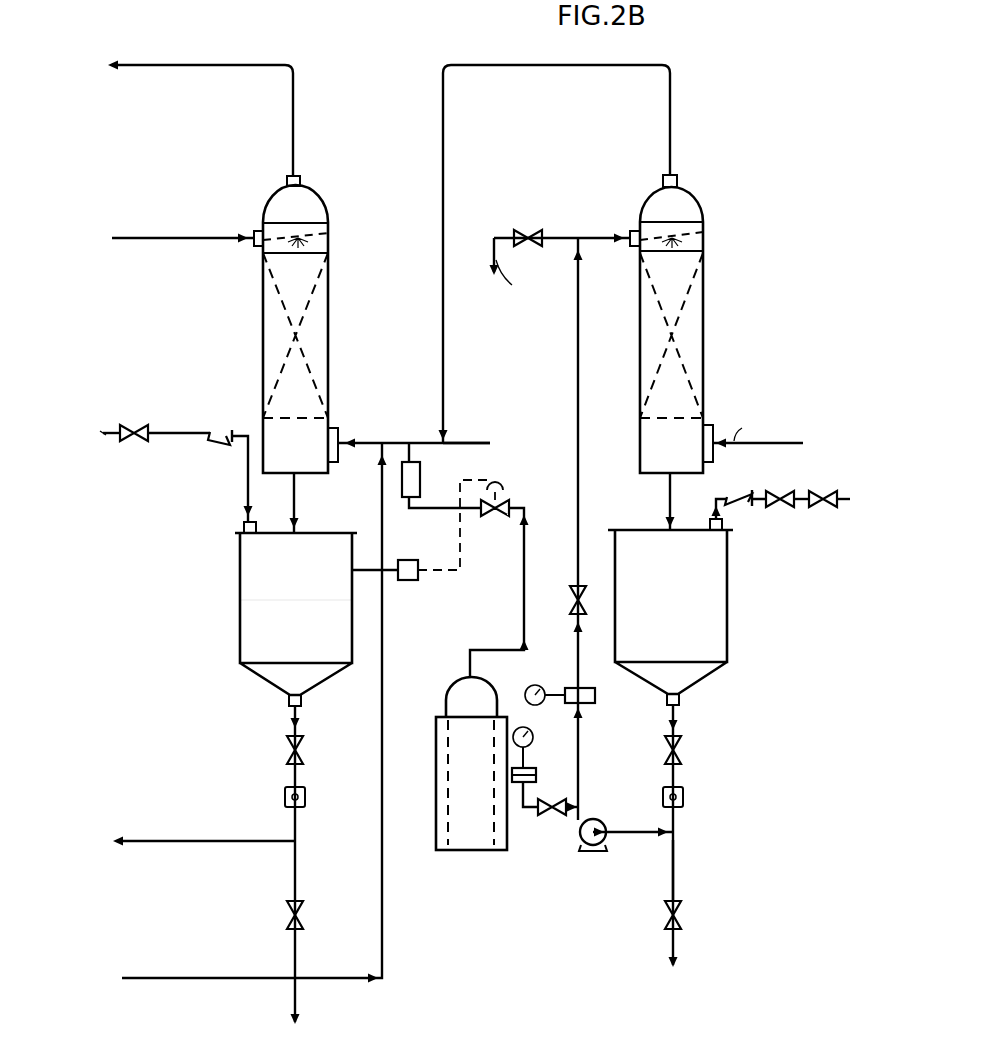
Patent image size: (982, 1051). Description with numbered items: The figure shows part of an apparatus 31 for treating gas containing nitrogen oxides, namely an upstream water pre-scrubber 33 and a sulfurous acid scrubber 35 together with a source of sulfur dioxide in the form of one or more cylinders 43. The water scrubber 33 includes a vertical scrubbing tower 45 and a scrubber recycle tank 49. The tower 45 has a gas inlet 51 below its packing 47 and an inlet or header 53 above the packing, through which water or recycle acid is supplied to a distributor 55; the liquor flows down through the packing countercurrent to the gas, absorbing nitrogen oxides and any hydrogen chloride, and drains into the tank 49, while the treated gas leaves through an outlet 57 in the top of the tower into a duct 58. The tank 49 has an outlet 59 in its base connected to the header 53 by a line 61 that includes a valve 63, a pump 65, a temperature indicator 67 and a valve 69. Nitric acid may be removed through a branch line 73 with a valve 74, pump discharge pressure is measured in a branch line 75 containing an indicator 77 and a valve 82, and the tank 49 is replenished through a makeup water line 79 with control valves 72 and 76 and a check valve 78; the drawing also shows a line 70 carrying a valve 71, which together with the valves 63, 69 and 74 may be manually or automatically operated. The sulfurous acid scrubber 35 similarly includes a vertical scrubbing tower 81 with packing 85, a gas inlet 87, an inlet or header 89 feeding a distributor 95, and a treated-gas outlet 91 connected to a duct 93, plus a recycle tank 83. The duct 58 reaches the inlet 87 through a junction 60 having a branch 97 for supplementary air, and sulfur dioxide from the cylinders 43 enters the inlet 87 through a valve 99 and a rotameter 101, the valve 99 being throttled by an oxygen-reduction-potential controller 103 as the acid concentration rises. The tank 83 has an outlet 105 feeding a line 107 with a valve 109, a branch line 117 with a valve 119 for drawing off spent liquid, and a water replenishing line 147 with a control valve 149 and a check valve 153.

The apparatus 31 is at (156, 636).
The upstream water pre-scrubber 33 is at (634, 355).
The H2SO3 scrubber 35 is at (206, 461).
The cylinders 43 is at (452, 683).
The scrubbing tower 45 is at (750, 343).
The packing 47 is at (703, 287).
The scrubber recycle tank 49 is at (728, 572).
The gas inlet 51 is at (711, 424).
The inlet header 53 is at (630, 247).
The distributor 55 is at (705, 234).
The outlet 57 is at (677, 183).
The duct 58 is at (443, 132).
The outlet 59 is at (680, 701).
The junction 60 is at (438, 440).
The line 61 is at (675, 823).
The valve 63 is at (682, 752).
The pump 65 is at (597, 852).
The temperature indicator 67 is at (588, 705).
The valve 69 is at (575, 598).
The scrubber drain line 70 is at (675, 875).
The valve 71 is at (682, 913).
The control valve 72 is at (817, 497).
The branch line 73 is at (490, 263).
The valve 74 is at (531, 230).
The branch line 75 is at (556, 849).
The control valve 76 is at (773, 512).
The indicator 77 is at (535, 760).
The check valve 78 is at (737, 497).
The makeup water line 79 is at (548, 805).
The scrubbing tower 81 is at (373, 342).
The valve 82 is at (846, 503).
The recycle tank 83 is at (240, 568).
The packing 85 is at (328, 287).
The inlet 87 is at (338, 432).
The inlet header 89 is at (258, 230).
The outlet 91 is at (300, 181).
The duct 93 is at (294, 100).
The distributor 95 is at (330, 233).
The branch 97 is at (458, 441).
The valve 99 is at (490, 516).
The rotameter 101 is at (420, 478).
The oxygen-reduction-potential controller 103 is at (408, 580).
The outlet 105 is at (288, 700).
The line 107 is at (297, 822).
The valve 109 is at (288, 750).
The branch line 117 is at (296, 878).
The valve 119 is at (306, 914).
The line 147 is at (158, 431).
The control valve 149 is at (132, 442).
The check valve 153 is at (213, 431).